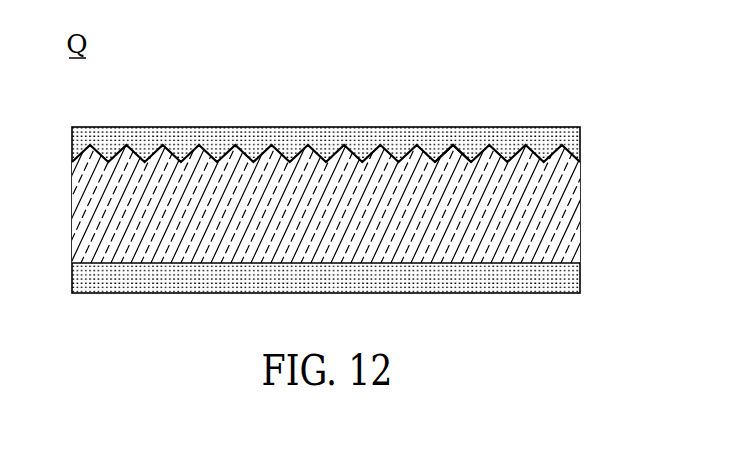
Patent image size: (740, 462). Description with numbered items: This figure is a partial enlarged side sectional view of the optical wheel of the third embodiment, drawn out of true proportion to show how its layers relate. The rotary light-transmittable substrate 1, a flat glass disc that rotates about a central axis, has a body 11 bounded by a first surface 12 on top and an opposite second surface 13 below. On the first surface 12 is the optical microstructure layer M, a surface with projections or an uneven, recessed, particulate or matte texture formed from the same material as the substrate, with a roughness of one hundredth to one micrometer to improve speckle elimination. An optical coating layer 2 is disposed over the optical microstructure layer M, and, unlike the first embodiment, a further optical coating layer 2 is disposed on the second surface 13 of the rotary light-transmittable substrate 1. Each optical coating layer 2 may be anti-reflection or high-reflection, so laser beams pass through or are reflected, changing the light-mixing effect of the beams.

The rotary light-transmittable substrate 1 is at (329, 181).
The body 11 is at (547, 185).
The first surface 12 is at (516, 150).
The second surface 13 is at (545, 264).
The optical coating layer 2 is at (584, 137).
The optical microstructure layer M is at (457, 146).